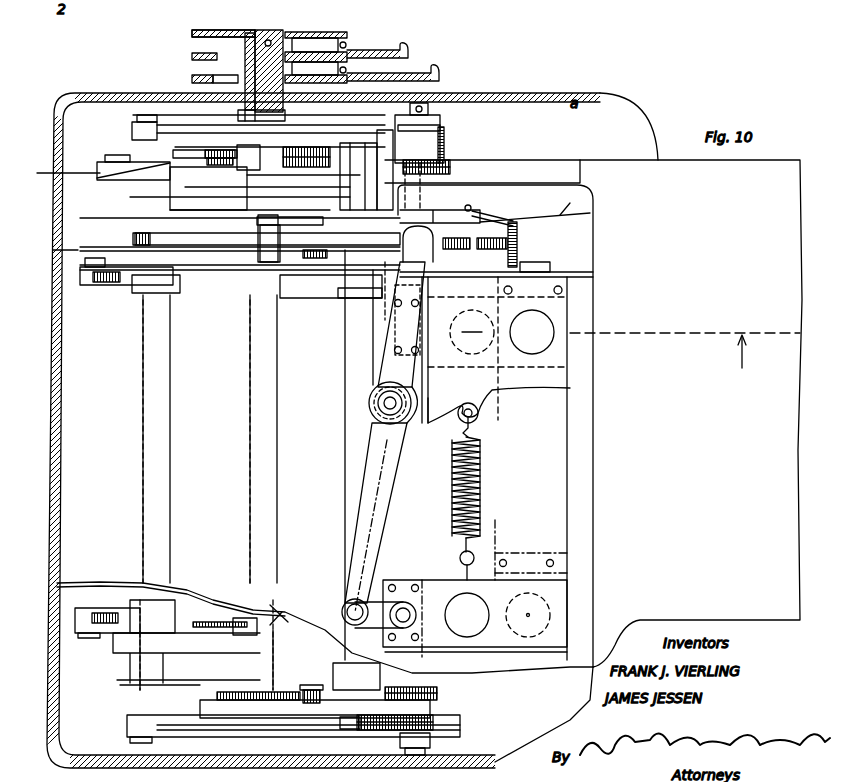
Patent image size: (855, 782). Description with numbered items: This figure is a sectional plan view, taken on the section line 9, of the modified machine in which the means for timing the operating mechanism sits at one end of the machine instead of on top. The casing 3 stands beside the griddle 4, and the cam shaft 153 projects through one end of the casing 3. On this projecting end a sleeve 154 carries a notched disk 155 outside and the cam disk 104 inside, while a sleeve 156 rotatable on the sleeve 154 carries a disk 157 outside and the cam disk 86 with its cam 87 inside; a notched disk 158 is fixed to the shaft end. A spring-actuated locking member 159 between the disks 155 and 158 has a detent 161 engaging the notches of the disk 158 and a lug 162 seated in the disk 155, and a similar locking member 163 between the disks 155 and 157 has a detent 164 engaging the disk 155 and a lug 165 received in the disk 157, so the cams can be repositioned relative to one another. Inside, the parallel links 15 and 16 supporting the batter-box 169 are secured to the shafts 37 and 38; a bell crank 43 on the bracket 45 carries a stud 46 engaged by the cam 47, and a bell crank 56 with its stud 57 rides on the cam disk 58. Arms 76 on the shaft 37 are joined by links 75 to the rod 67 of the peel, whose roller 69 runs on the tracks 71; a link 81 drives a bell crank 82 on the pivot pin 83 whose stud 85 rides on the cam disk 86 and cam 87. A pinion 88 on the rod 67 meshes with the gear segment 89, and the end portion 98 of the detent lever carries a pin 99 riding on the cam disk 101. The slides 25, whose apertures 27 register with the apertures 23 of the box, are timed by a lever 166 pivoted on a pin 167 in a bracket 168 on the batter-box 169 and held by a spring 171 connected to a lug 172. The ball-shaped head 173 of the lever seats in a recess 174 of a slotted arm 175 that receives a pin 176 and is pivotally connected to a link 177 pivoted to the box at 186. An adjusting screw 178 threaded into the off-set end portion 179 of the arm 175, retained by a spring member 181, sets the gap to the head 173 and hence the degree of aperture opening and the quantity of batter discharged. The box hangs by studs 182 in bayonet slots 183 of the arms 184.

The casing 3 is at (518, 99).
The griddle 4 is at (670, 168).
The section line 9 is at (424, 309).
The parallel links 15 is at (310, 285).
The parallel links 16 is at (122, 285).
The apertures 23 is at (468, 352).
The slides 25 is at (567, 362).
The apertures 27 is at (550, 339).
The shaft 37 is at (360, 360).
The shaft 38 is at (145, 403).
The bell crank 43 is at (282, 612).
The bracket 45 is at (170, 200).
The stud 46 is at (248, 620).
The cam 47 is at (203, 622).
The bell crank 56 is at (260, 226).
The stud 57 is at (267, 273).
The cam disk 58 is at (237, 273).
The rod 67 is at (427, 748).
The roller 69 is at (442, 163).
The tracks 71 is at (548, 165).
The links 75 is at (440, 133).
The arms 76 is at (130, 132).
The link 81 is at (67, 175).
The bell crank 82 is at (100, 165).
The pivot pin 83 is at (110, 178).
The stud 85 is at (240, 172).
The cam disk 86 is at (313, 152).
The cam 87 is at (175, 153).
The pinion 88 is at (437, 722).
The gear segment 89 is at (368, 722).
The end portion 98 is at (305, 703).
The pin 99 is at (308, 690).
The cam disk 101 is at (217, 698).
The cam disk 104 is at (345, 160).
The cam shaft 153 is at (260, 437).
The sleeve 154 is at (272, 30).
The notched disk 155 is at (205, 52).
The sleeve 156 is at (293, 133).
The disk 157 is at (215, 73).
The notched disk 158 is at (215, 30).
The locking member 159 is at (380, 48).
The detent 161 is at (350, 43).
The lug 162 is at (215, 63).
The locking member 163 is at (420, 70).
The detent 164 is at (376, 57).
The lug 165 is at (222, 83).
The lever 166 is at (365, 522).
The pin 167 is at (387, 407).
The bracket 168 is at (378, 403).
The batter-box 169 is at (552, 384).
The spring 171 is at (478, 487).
The lug 172 is at (480, 414).
The ball-shaped head 173 is at (418, 233).
The recess 174 is at (470, 213).
The slotted arm 175 is at (150, 233).
The pin 176 is at (348, 275).
The link 177 is at (575, 305).
The adjusting screw 178 is at (520, 242).
The off-set end portion 179 is at (592, 214).
The spring member 181 is at (570, 203).
The studs 182 is at (543, 268).
The bayonet slots 183 is at (560, 271).
The arms 184 is at (202, 276).
The pivot 186 is at (455, 279).